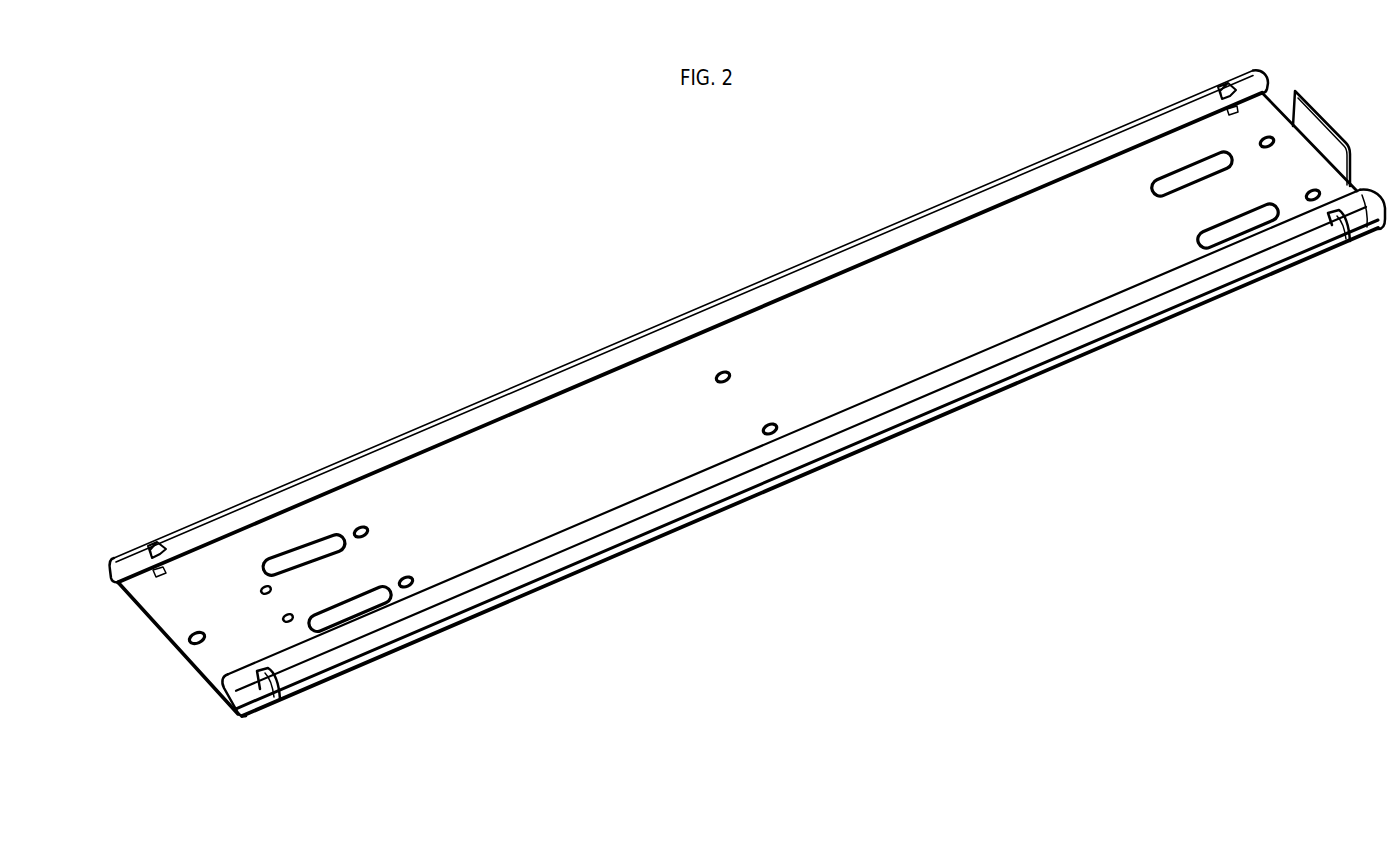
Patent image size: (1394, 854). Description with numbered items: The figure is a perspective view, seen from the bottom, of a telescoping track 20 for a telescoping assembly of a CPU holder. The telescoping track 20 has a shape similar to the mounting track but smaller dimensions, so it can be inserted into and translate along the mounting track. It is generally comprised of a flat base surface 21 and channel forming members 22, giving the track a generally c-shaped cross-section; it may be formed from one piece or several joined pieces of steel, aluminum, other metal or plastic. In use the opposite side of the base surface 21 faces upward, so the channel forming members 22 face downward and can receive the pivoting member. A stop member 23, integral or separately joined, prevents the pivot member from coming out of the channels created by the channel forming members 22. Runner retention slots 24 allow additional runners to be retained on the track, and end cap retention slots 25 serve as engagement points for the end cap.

The telescoping track 20 is at (790, 570).
The flat base surface 21 is at (1043, 268).
The channel forming members 22 is at (230, 688).
The stop member 23 is at (1318, 130).
The runner retention slots 24 is at (1221, 86).
The end cap retention slots 25 is at (152, 548).